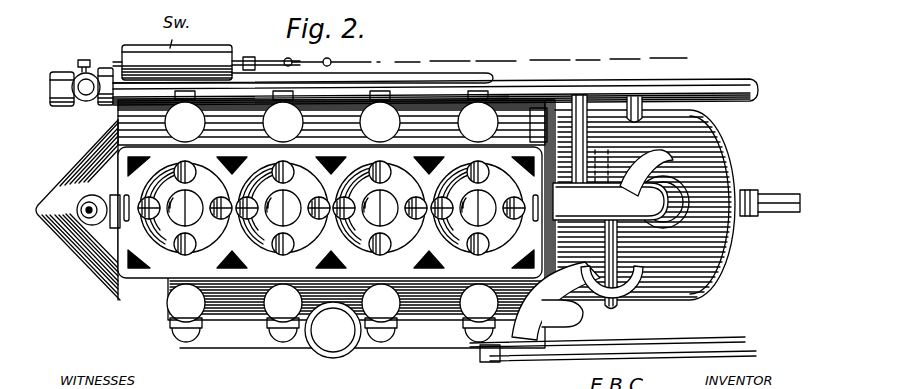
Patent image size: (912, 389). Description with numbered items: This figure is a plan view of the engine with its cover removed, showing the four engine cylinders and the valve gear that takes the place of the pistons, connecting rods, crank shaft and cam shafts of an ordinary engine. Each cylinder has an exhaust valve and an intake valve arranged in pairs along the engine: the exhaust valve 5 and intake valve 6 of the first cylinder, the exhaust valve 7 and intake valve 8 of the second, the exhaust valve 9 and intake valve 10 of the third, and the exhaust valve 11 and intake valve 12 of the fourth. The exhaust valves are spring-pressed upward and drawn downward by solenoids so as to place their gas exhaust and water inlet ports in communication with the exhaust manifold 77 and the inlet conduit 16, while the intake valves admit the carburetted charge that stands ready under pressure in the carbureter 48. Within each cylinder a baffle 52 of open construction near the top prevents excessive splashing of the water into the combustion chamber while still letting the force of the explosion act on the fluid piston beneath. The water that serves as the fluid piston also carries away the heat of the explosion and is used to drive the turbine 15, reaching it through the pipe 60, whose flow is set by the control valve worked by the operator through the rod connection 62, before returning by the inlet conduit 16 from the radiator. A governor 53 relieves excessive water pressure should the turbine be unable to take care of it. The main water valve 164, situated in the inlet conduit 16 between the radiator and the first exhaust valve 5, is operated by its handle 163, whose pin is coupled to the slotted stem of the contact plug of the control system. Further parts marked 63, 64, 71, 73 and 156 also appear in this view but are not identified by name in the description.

The exhaust valve 5 is at (207, 122).
The exhaust valve 7 is at (305, 122).
The exhaust valve 9 is at (402, 122).
The exhaust valve 11 is at (500, 122).
The intake valve 6 is at (178, 306).
The intake valve 8 is at (277, 310).
The intake valve 10 is at (388, 320).
The intake valve 12 is at (473, 312).
The turbine 15 is at (688, 160).
The inlet conduit 16 is at (264, 75).
The carbureter 48 is at (333, 359).
The baffle 52 is at (331, 217).
The governor 53 is at (76, 210).
The pipe 60 is at (578, 318).
The rod connection 62 is at (688, 340).
The rod 63 is at (553, 352).
The bracket 64 is at (482, 338).
The pipe 71 is at (640, 97).
The tube 73 is at (660, 197).
The exhaust manifold 77 is at (760, 92).
The link 156 is at (291, 60).
The handle 163 is at (102, 68).
The main water valve 164 is at (86, 59).